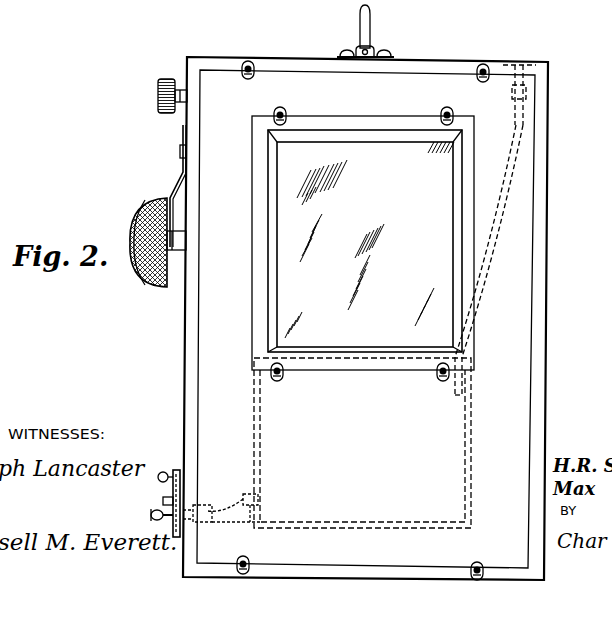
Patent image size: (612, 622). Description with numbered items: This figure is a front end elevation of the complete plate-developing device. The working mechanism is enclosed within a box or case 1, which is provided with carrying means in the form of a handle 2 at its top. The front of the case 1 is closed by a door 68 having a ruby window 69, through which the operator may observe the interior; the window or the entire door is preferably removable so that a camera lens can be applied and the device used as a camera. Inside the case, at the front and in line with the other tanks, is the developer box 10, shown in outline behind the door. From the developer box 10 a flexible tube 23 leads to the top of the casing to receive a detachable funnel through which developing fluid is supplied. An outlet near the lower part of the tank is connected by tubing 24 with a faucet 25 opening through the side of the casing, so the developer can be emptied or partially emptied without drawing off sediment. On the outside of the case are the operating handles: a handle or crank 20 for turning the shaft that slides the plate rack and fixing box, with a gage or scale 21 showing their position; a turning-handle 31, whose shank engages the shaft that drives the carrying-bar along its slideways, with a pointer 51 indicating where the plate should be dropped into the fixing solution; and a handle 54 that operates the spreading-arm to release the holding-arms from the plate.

The box or case 1 is at (541, 322).
The handle 2 is at (370, 30).
The developer box 10 is at (486, 428).
The handle or crank 20 is at (162, 472).
The gage or scale 21 is at (178, 467).
The flexible tube 23 is at (512, 214).
The tubing 24 is at (227, 506).
The faucet 25 is at (156, 509).
The turning-handle 31 is at (150, 287).
The pointer 51 is at (177, 182).
The handle 54 is at (157, 94).
The door 68 is at (362, 446).
The ruby window 69 is at (363, 244).